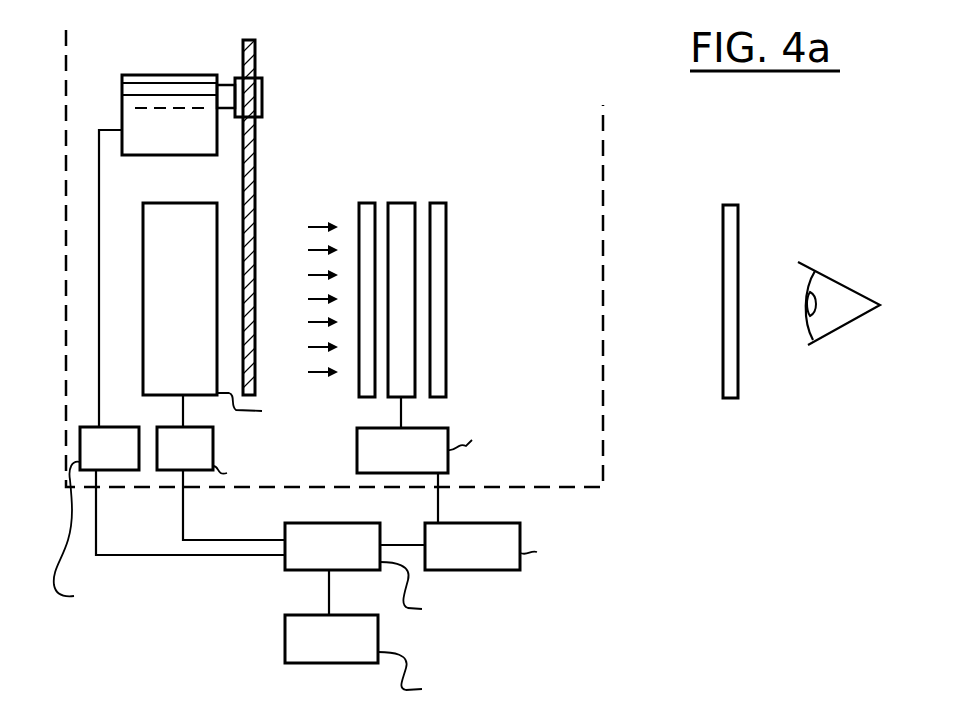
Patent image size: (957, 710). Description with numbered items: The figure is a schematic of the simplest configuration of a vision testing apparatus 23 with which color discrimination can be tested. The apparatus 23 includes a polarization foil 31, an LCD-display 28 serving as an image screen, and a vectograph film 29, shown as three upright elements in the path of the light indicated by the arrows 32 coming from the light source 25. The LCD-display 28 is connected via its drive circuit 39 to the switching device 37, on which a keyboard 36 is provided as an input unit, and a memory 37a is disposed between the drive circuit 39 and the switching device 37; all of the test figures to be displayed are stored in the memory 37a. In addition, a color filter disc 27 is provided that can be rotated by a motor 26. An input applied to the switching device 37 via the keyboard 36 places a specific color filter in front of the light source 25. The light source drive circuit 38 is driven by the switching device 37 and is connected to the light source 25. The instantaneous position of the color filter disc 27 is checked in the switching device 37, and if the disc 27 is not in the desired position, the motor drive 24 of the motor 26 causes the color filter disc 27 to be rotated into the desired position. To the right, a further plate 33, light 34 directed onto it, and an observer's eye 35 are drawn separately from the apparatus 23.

The vision testing apparatus 23 is at (63, 283).
The motor drive 24 is at (130, 464).
The light source 25 is at (176, 215).
The motor 26 is at (172, 80).
The color filter disc 27 is at (256, 218).
The LCD-display 28 is at (401, 212).
The vectograph film 29 is at (438, 210).
The polarization foil 31 is at (366, 210).
The light beam 32 is at (312, 225).
The display plate 33 is at (735, 207).
The emitted light 34 is at (718, 190).
The observer's eye 35 is at (840, 302).
The keyboard 36 is at (345, 650).
The switching device 37 is at (345, 558).
The memory 37a is at (490, 558).
The light source drive circuit 38 is at (204, 464).
The drive circuit 39 is at (420, 466).